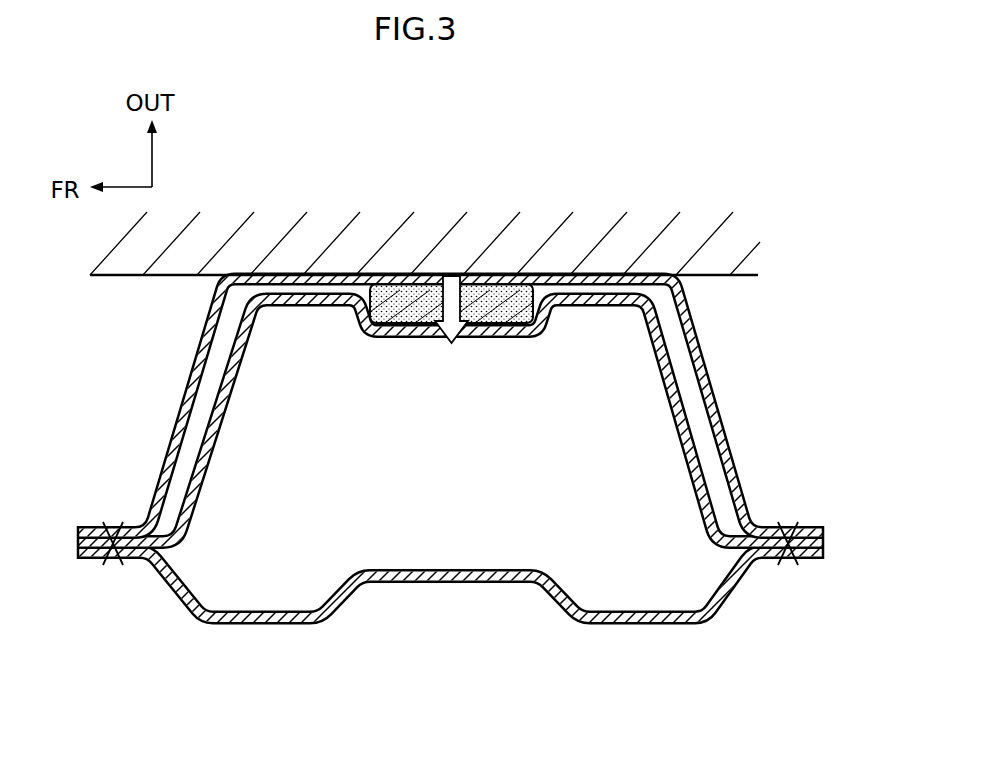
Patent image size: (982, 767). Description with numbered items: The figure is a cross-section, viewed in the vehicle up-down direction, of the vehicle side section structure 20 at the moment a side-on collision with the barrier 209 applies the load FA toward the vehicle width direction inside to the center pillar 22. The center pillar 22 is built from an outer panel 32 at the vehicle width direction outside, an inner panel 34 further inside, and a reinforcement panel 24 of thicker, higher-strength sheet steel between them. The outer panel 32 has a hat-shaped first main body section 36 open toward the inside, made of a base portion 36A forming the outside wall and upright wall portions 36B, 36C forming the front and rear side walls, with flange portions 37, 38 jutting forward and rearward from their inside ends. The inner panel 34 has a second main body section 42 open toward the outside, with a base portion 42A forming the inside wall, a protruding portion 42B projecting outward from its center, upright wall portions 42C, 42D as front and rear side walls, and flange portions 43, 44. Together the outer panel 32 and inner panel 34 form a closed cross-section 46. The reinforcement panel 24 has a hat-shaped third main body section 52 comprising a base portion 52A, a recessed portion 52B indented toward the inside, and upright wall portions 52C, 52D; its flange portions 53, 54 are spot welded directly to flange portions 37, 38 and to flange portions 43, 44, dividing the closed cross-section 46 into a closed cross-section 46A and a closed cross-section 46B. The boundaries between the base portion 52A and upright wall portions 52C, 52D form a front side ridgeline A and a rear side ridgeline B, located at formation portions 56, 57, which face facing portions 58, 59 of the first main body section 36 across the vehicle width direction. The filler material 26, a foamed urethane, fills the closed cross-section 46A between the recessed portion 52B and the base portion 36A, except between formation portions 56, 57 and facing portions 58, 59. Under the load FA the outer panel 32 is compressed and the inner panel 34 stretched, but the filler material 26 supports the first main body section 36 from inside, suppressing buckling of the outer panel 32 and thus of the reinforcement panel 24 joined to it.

The vehicle side section structure 20 is at (772, 364).
The center pillar 22 is at (700, 327).
The reinforcement panel 24 is at (673, 436).
The filler material 26 is at (522, 284).
The outer panel 32 is at (724, 415).
The inner panel 34 is at (262, 624).
The first main body section 36 is at (340, 273).
The base portion 36A is at (378, 281).
The upright wall portion 36B is at (198, 349).
The upright wall portion 36C is at (708, 375).
The flange portion 37 is at (95, 527).
The flange portion 38 is at (812, 527).
The second main body section 42 is at (305, 624).
The base portion 42A is at (222, 624).
The protruding portion 42B is at (450, 571).
The upright wall portion 42C is at (180, 596).
The upright wall portion 42D is at (720, 606).
The flange portion 43 is at (95, 559).
The flange portion 44 is at (808, 559).
The closed cross-section 46 is at (345, 460).
The closed cross-section 46A is at (192, 440).
The closed cross-section 46B is at (513, 578).
The third main body section 52 is at (565, 307).
The base portion 52A is at (305, 307).
The recessed portion 52B is at (405, 339).
The upright wall portion 52C is at (222, 448).
The upright wall portion 52D is at (692, 472).
The flange portion 53 is at (76, 543).
The flange portion 54 is at (826, 543).
The formation portion 56 is at (258, 307).
The formation portion 57 is at (638, 307).
The facing portion 58 is at (250, 272).
The facing portion 59 is at (637, 273).
The barrier 209 is at (770, 276).
The front side ridgeline A is at (231, 301).
The rear side ridgeline B is at (656, 297).
The load FA is at (451, 284).